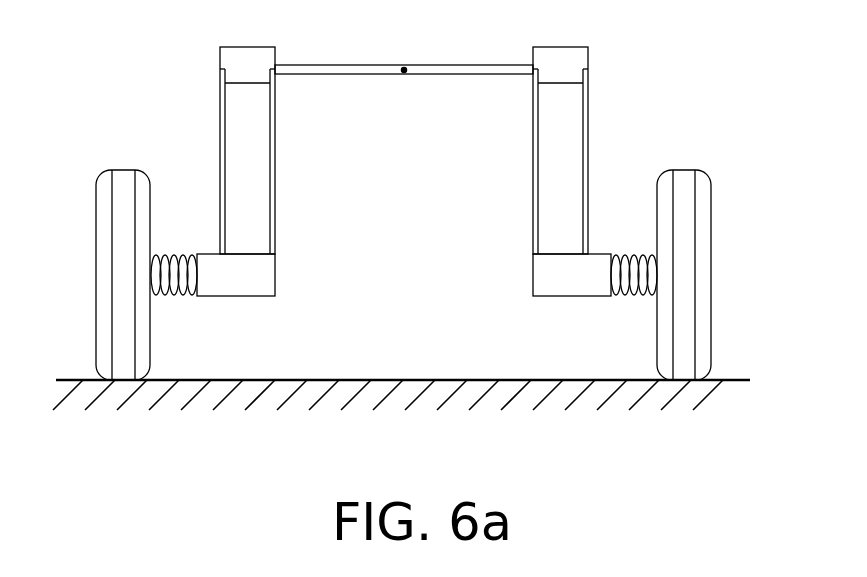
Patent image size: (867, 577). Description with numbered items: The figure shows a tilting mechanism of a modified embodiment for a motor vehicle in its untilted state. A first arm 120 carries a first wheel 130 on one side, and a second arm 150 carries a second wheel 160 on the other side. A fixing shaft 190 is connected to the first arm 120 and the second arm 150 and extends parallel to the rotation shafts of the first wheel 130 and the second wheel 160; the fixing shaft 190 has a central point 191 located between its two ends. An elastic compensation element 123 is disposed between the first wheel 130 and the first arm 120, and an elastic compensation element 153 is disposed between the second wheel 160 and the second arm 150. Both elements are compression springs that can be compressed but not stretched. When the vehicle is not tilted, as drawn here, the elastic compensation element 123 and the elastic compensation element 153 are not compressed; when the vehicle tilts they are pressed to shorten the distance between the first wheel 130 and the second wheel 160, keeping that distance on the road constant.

The first arm 120 is at (237, 297).
The elastic compensation element 123 is at (177, 255).
The first wheel 130 is at (122, 170).
The second arm 150 is at (570, 298).
The elastic compensation element 153 is at (632, 253).
The second wheel 160 is at (687, 168).
The fixing shaft 190 is at (487, 72).
The central point 191 is at (404, 68).